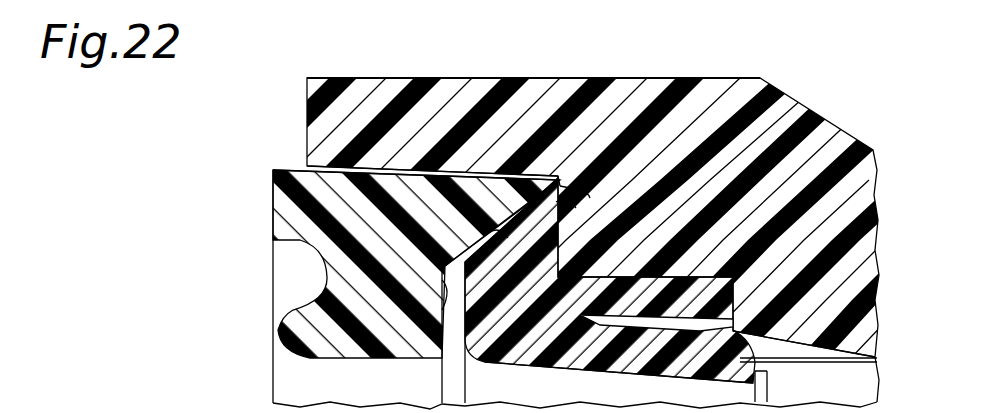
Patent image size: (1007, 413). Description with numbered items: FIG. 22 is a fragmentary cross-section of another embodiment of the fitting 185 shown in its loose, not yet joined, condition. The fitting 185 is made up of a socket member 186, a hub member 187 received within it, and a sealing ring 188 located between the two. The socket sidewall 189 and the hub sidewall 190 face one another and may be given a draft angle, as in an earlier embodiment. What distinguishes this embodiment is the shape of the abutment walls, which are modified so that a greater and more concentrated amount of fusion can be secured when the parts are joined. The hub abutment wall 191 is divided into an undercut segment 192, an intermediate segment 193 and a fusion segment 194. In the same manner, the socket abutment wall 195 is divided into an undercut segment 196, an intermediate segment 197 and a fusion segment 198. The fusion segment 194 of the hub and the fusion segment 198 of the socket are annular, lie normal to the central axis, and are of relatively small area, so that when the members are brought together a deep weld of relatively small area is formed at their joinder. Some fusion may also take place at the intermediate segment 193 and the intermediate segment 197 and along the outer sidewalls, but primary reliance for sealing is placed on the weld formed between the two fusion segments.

The fitting 185 is at (612, 74).
The socket member 186 is at (718, 78).
The hub member 187 is at (272, 196).
The sealing ring 188 is at (550, 368).
The socket sidewall 189 is at (374, 176).
The hub sidewall 190 is at (437, 172).
The hub abutment wall 191 is at (510, 237).
The undercut segment 192 is at (536, 185).
The intermediate segment 193 is at (478, 244).
The fusion segment 194 is at (434, 300).
The socket abutment wall 195 is at (522, 210).
The undercut segment 196 is at (582, 189).
The intermediate segment 197 is at (560, 204).
The fusion segment 198 is at (472, 306).